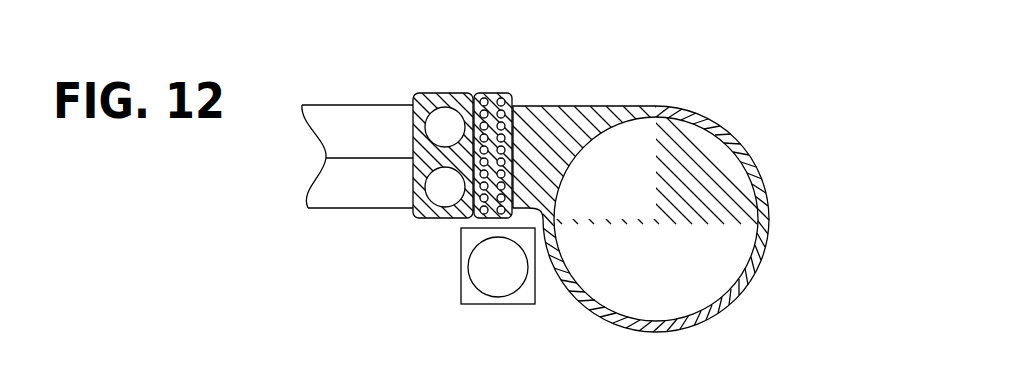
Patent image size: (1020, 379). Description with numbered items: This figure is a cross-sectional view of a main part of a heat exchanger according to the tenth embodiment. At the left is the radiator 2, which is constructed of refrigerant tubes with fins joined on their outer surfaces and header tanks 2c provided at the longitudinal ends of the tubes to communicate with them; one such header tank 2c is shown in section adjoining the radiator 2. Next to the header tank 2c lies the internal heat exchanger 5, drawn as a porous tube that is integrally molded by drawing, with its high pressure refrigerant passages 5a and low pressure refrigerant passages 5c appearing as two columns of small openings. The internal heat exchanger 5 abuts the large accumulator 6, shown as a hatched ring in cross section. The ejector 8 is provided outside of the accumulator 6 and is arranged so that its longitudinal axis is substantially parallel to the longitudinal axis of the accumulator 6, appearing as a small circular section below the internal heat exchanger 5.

The radiator 2 is at (352, 100).
The header tanks 2c is at (443, 92).
The internal heat exchanger 5 is at (492, 115).
The high pressure refrigerant passages 5a is at (483, 97).
The low pressure refrigerant passages 5c is at (504, 98).
The accumulator 6 is at (735, 135).
The ejector 8 is at (458, 265).